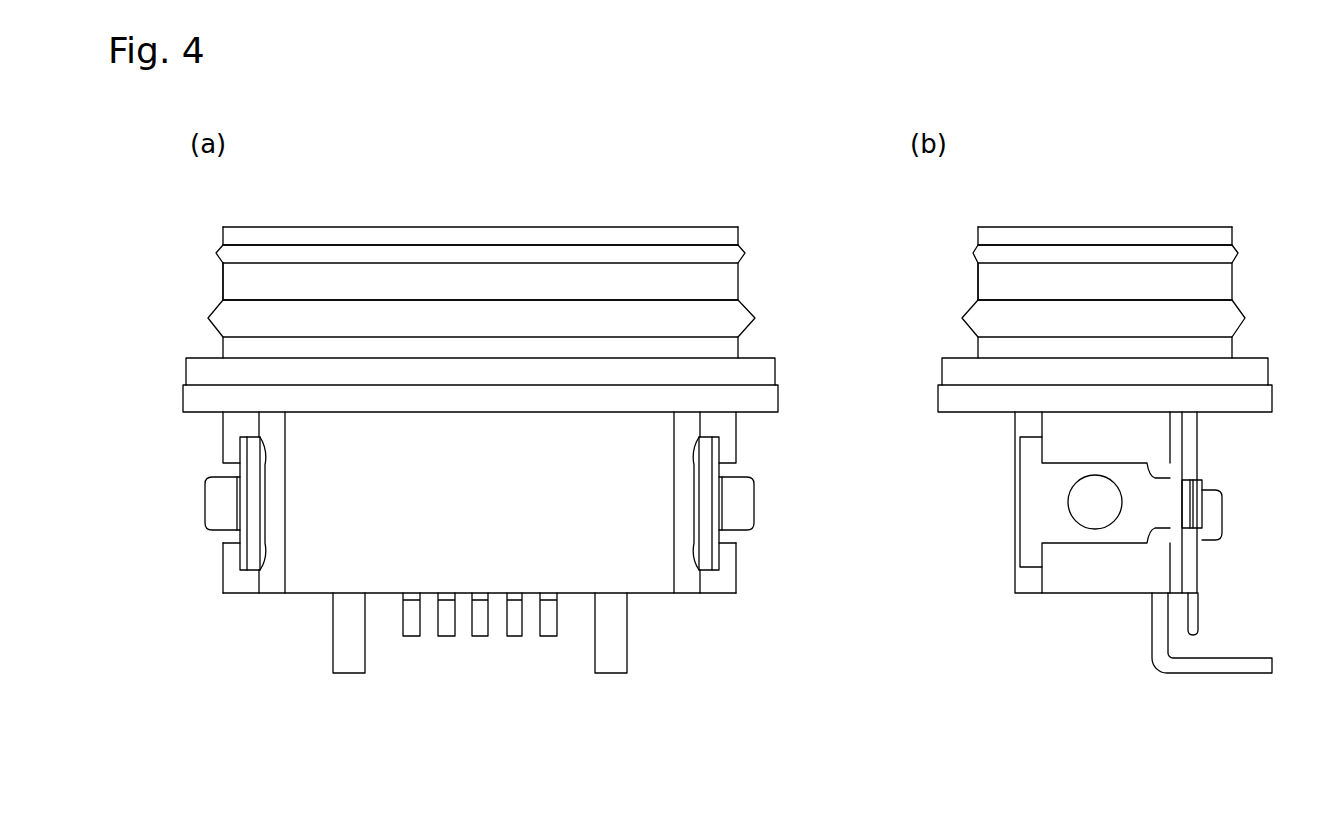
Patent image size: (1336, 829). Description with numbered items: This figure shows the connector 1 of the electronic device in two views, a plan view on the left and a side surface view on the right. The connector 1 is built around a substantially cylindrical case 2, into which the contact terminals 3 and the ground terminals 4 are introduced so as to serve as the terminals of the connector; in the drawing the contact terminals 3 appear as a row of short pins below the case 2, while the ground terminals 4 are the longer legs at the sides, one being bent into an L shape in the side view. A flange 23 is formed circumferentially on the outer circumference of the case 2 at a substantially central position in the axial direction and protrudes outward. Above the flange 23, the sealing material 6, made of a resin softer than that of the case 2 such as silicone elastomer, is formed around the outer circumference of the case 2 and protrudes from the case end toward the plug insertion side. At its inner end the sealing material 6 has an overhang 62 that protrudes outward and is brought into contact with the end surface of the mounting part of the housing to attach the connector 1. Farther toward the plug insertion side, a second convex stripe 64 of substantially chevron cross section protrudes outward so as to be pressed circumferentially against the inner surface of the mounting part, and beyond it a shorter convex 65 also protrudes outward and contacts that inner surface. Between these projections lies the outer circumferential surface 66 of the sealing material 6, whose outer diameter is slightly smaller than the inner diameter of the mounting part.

The connector 1 is at (523, 212).
The case 2 is at (633, 497).
The contact terminals 3 is at (445, 634).
The ground terminals 4 is at (614, 652).
The sealing material 6 is at (378, 228).
The flange 23 is at (187, 400).
The overhang 62 is at (758, 361).
The second convex stripe 64 is at (742, 306).
The convex 65 is at (743, 253).
The outer circumferential surface 66 is at (233, 281).